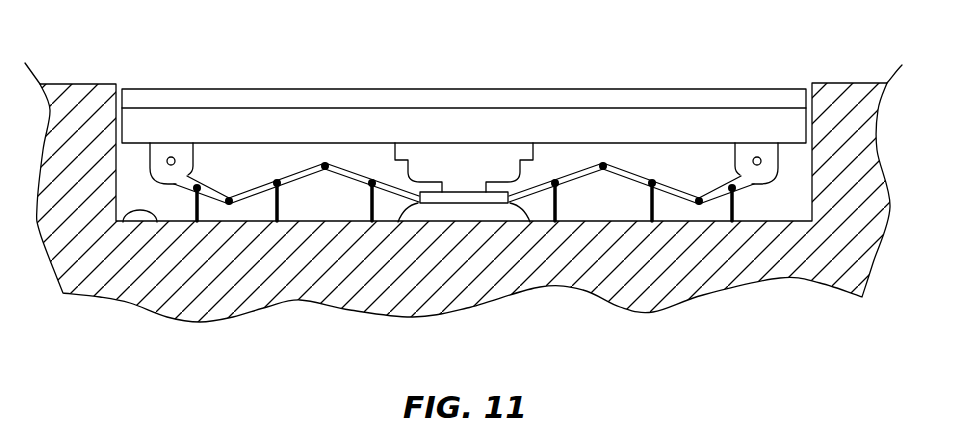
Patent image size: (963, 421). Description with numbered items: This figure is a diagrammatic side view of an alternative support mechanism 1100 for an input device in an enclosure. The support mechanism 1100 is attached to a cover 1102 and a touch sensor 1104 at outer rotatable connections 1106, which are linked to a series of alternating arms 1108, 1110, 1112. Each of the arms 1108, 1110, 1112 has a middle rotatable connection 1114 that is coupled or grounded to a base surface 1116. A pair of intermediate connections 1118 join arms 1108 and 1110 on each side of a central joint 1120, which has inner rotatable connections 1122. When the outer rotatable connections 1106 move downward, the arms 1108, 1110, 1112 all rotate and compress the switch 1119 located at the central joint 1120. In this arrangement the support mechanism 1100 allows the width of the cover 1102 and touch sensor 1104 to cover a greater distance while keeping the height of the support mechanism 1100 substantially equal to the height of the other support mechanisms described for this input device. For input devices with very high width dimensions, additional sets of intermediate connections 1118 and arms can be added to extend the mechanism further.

The support mechanism 1100 is at (138, 178).
The cover 1102 is at (533, 100).
The touch sensor 1104 is at (490, 128).
The outer rotatable connections 1106 is at (173, 158).
The arm 1108 is at (208, 192).
The arm 1110 is at (314, 170).
The arm 1112 is at (349, 175).
The middle rotatable connection 1114 is at (277, 181).
The base surface 1116 is at (125, 222).
The intermediate connections 1118 is at (230, 203).
The switch 1119 is at (447, 160).
The central joint 1120 is at (455, 198).
The inner rotatable connections 1122 is at (418, 204).